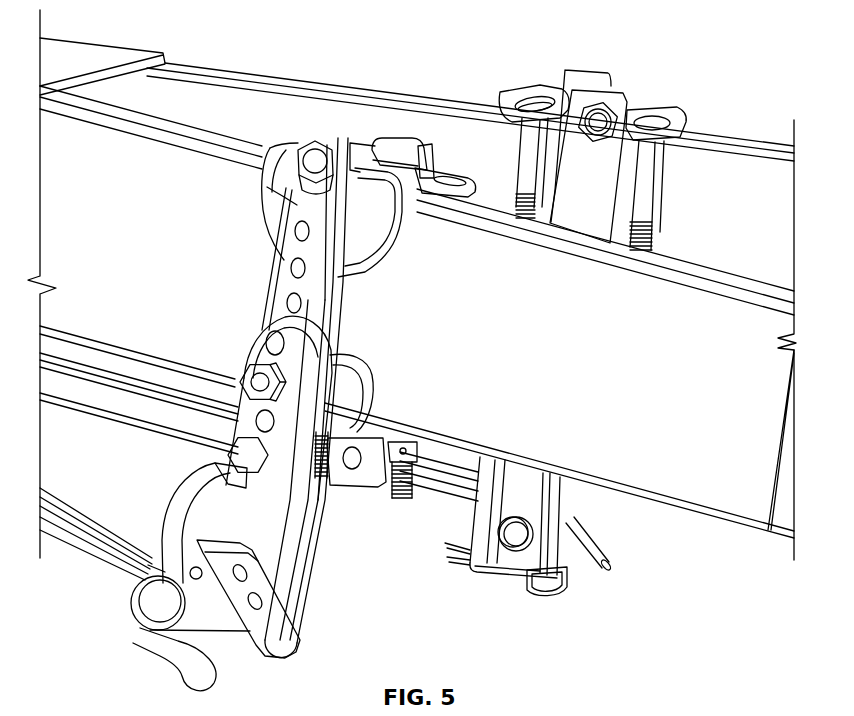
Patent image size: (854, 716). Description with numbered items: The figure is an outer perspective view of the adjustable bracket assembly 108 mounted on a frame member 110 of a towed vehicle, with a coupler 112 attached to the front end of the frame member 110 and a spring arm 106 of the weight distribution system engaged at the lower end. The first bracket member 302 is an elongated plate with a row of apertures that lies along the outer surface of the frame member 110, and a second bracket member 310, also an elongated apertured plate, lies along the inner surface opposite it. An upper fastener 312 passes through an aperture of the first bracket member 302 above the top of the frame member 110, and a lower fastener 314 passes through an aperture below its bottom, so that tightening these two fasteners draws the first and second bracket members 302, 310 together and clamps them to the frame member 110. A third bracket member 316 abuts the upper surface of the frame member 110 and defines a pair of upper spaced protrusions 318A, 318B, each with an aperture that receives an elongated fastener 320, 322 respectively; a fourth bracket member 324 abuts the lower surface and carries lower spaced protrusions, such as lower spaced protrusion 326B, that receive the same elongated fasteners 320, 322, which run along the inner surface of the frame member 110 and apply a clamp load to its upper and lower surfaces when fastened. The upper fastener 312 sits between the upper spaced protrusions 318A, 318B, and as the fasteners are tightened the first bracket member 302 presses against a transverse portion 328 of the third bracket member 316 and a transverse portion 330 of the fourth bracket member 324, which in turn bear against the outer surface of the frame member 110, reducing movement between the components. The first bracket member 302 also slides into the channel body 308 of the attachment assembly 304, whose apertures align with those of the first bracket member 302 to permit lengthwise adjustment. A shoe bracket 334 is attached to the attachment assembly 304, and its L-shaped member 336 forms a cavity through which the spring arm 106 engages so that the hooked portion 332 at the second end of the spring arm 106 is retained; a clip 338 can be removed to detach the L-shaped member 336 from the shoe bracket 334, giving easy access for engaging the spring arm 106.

The spring arm 106 is at (113, 418).
The adjustable bracket assembly 108 is at (308, 130).
The frame member 110 is at (345, 85).
The coupler 112 is at (117, 47).
The first bracket member 302 is at (280, 273).
The attachment assembly 304 is at (300, 570).
The channel body 308 is at (510, 560).
The second bracket member 310 is at (430, 150).
The upper fastener 312 is at (368, 150).
The lower fastener 314 is at (238, 367).
The third bracket member 316 is at (263, 213).
The upper spaced protrusion 318A is at (370, 140).
The upper spaced protrusion 318B is at (430, 190).
The elongated fastener 320 is at (515, 187).
The elongated fastener 322 is at (657, 183).
The fourth bracket member 324 is at (370, 370).
The lower spaced protrusion 326B is at (392, 430).
The transverse portion 328 is at (365, 260).
The transverse portion 330 is at (358, 390).
The hooked portion 332 is at (222, 542).
The shoe bracket 334 is at (140, 594).
The L-shaped member 336 is at (192, 478).
The clip 338 is at (217, 682).